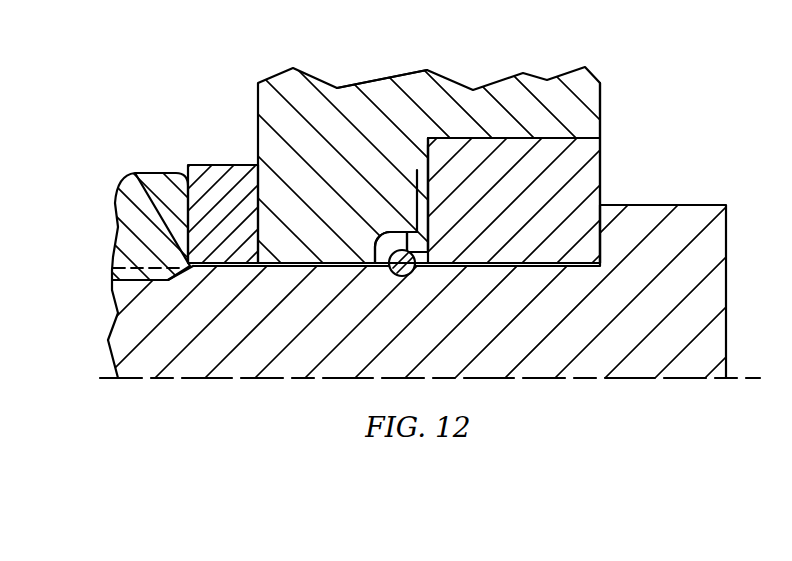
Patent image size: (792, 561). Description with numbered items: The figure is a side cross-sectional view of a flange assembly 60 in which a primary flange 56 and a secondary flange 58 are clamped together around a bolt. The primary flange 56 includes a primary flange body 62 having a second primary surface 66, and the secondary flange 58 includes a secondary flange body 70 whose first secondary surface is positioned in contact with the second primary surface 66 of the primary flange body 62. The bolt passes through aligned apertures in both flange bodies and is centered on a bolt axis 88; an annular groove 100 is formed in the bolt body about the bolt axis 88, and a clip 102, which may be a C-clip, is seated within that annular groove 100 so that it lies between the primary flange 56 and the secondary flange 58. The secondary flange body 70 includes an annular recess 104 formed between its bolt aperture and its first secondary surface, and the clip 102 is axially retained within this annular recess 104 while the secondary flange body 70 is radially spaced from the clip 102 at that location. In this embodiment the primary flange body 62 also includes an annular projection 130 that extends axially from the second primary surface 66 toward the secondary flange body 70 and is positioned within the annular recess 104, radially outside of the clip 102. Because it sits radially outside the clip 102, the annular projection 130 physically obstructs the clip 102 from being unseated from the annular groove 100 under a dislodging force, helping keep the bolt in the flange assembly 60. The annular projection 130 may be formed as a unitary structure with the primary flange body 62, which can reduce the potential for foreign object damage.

The primary flange 56 is at (615, 185).
The secondary flange 58 is at (356, 104).
The flange assembly 60 is at (640, 92).
The primary flange body 62 is at (583, 158).
The second primary surface 66 is at (427, 172).
The secondary flange body 70 is at (275, 120).
The bolt axis 88 is at (750, 382).
The annular groove 100 is at (378, 273).
The clip 102 is at (395, 279).
The annular recess 104 is at (375, 227).
The annular projection 130 is at (416, 228).